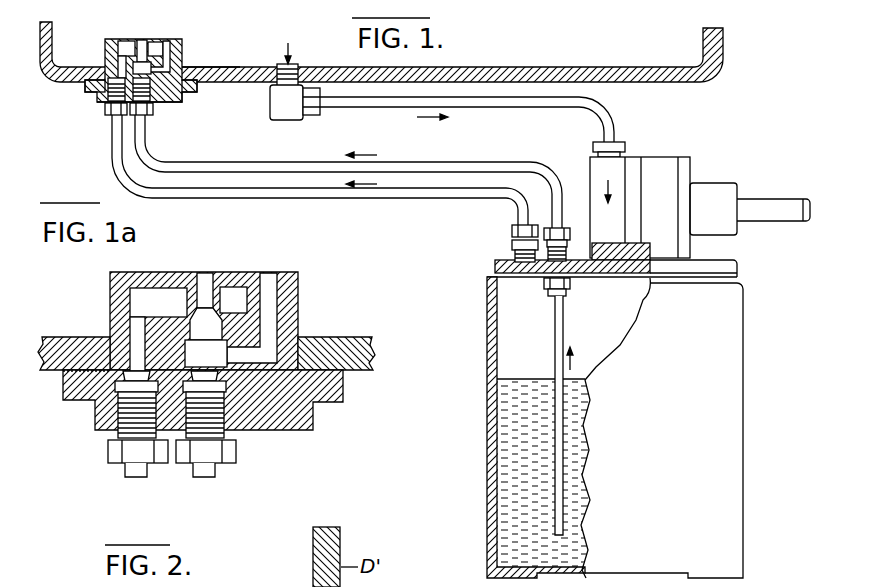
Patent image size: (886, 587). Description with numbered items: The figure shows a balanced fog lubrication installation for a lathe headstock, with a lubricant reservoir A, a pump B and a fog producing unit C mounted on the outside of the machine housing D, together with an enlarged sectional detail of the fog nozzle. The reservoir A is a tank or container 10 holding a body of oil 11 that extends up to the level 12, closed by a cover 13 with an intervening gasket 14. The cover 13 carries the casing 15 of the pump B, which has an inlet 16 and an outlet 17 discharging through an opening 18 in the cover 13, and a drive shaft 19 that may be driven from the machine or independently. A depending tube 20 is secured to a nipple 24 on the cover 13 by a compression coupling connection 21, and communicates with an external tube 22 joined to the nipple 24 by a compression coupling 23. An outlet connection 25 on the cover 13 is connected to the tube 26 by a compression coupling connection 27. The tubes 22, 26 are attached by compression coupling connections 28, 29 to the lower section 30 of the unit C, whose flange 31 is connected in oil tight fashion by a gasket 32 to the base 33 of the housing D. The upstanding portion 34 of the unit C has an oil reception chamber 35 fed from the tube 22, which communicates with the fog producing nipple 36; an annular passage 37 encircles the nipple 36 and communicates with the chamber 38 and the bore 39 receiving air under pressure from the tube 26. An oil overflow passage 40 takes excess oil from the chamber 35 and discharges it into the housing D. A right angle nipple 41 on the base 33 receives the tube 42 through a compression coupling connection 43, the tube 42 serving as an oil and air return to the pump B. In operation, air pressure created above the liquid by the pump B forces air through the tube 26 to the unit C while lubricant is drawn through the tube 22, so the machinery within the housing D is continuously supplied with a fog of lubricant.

In FIG. 1, the tank 10 is at (487, 436).
In FIG. 1, the body of oil 11 is at (507, 408).
In FIG. 1, the level 12 is at (530, 378).
In FIG. 1, the cover 13 is at (495, 264).
In FIG. 1, the gasket 14 is at (492, 274).
In FIG. 1, the casing 15 is at (668, 177).
In FIG. 1, the inlet 16 is at (626, 143).
In FIG. 1, the outlet 17 is at (604, 243).
In FIG. 1, the opening 18 is at (605, 278).
In FIG. 1, the drive shaft 19 is at (769, 199).
In FIG. 1, the depending tube 20 is at (564, 334).
In FIG. 1, the compression coupling connection 21 is at (553, 306).
In FIG. 1, the external tube 22 is at (500, 162).
In FIG. 1, the compression coupling 23 is at (553, 228).
In FIG. 1, the nipple 24 is at (549, 294).
In FIG. 1, the outlet connection 25 is at (512, 244).
In FIG. 1, the tube 26 is at (405, 191).
In FIG. 1, the compression coupling connection 27 is at (512, 228).
In FIG. 1, the compression coupling connection 28 is at (152, 114).
In FIG. 1A, the compression coupling connection 28 is at (232, 458).
In FIG. 1, the compression coupling connection 29 is at (105, 114).
In FIG. 1A, the compression coupling connection 29 is at (110, 453).
In FIG. 1, the lower section 30 is at (98, 97).
In FIG. 1A, the lower section 30 is at (96, 418).
In FIG. 1, the flange 31 is at (197, 88).
In FIG. 1A, the flange 31 is at (344, 392).
In FIG. 1, the gasket 32 is at (88, 82).
In FIG. 1A, the gasket 32 is at (64, 373).
In FIG. 1, the base 33 is at (240, 67).
In FIG. 1A, the base 33 is at (331, 345).
In FIG. 1, the upstanding portion 34 is at (181, 40).
In FIG. 1A, the upstanding portion 34 is at (296, 272).
In FIG. 1, the oil reception chamber 35 is at (175, 99).
In FIG. 1A, the oil reception chamber 35 is at (213, 353).
In FIG. 1, the fog producing nipple 36 is at (142, 51).
In FIG. 1A, the fog producing nipple 36 is at (206, 272).
In FIG. 1A, the annular passage 37 is at (186, 272).
In FIG. 1, the chamber 38 is at (118, 41).
In FIG. 1A, the chamber 38 is at (138, 297).
In FIG. 1, the bore 39 is at (110, 62).
In FIG. 1A, the bore 39 is at (137, 328).
In FIG. 1, the oil overflow passage 40 is at (165, 50).
In FIG. 1A, the oil overflow passage 40 is at (278, 293).
In FIG. 1, the right angle nipple 41 is at (285, 112).
In FIG. 1, the tube 42 is at (362, 109).
In FIG. 1, the compression coupling connection 43 is at (315, 116).
In FIG. 1, the lubricant reservoir A is at (487, 378).
In FIG. 1, the pump B is at (683, 157).
In FIG. 1, the fog producing unit C is at (142, 18).
In FIG. 1A, the fog producing unit C is at (255, 266).
In FIG. 1, the machine housing D is at (577, 67).